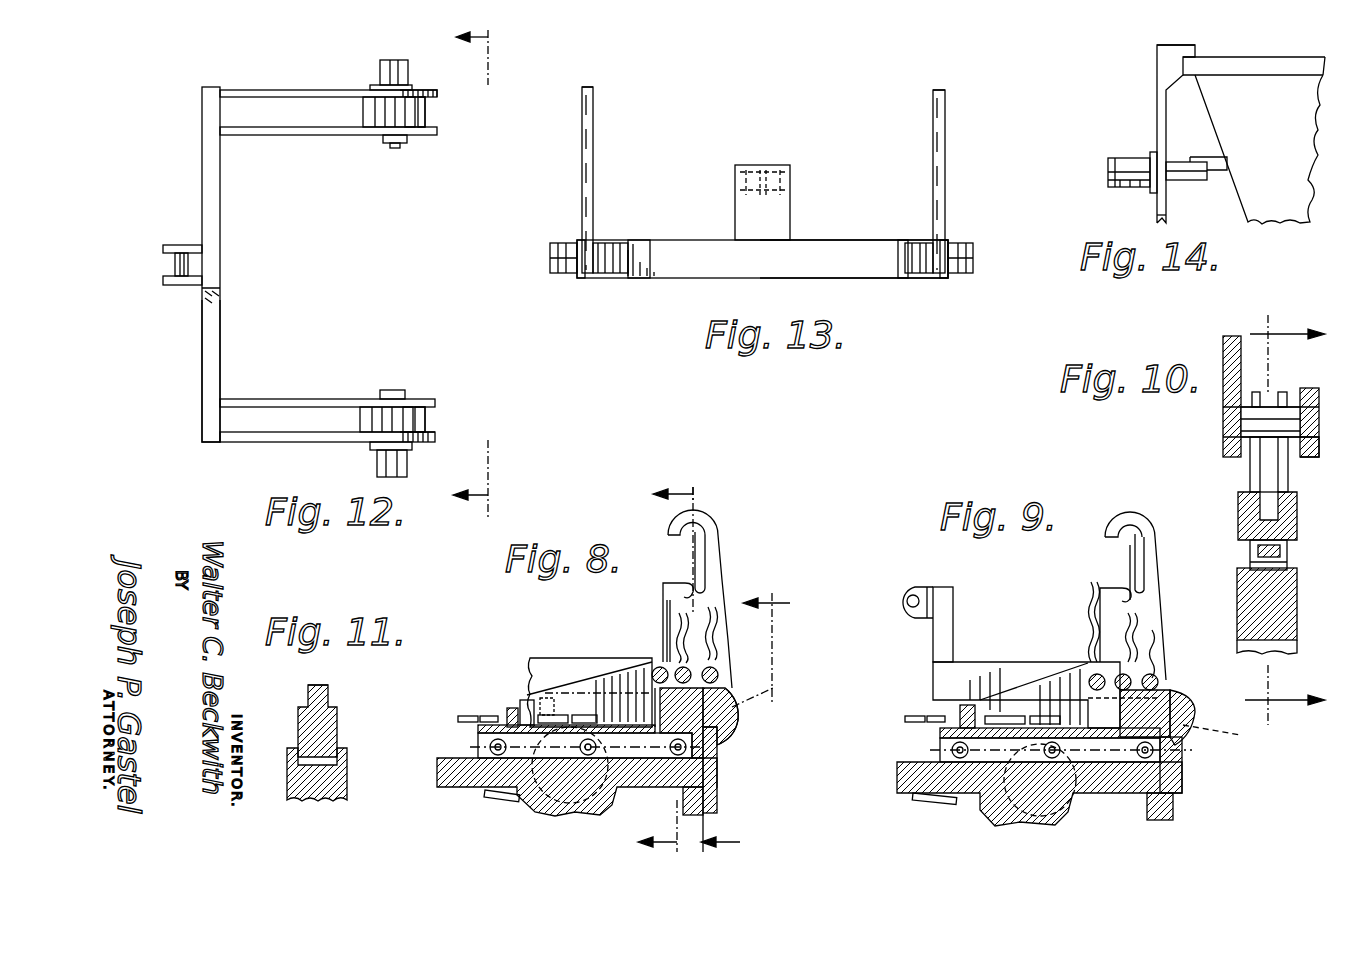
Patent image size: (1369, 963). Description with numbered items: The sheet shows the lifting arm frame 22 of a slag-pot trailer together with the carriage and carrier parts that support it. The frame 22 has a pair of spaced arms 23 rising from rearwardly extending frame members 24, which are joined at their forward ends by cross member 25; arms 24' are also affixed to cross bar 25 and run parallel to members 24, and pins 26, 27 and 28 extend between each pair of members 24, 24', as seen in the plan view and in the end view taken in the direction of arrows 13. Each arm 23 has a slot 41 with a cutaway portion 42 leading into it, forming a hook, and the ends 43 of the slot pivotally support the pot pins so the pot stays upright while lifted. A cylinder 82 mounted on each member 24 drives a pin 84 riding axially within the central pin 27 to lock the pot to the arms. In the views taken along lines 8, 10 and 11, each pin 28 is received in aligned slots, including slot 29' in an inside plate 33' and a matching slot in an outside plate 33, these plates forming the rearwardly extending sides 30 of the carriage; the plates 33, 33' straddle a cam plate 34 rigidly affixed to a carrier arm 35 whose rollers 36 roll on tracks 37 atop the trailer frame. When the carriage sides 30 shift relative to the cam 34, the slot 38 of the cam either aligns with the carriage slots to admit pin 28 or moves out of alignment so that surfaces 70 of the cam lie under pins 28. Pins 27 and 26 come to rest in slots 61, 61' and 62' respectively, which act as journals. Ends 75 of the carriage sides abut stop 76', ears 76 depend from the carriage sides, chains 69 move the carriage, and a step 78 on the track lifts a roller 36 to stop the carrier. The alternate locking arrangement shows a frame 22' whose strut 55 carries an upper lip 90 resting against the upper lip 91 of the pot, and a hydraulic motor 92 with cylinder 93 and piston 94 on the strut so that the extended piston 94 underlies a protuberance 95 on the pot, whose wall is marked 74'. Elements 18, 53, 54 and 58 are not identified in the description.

In FIG. 10, the section line 8— 8 is at (1285, 519).
In FIG. 8, the section line 10— 10 is at (668, 663).
In FIG. 8, the section line 11— 11 is at (755, 716).
In FIG. 12, the view arrows 13— 13 is at (494, 273).
In FIG. 8, the base member 18 is at (565, 815).
In FIG. 12, the lifting arm frame 22 is at (236, 264).
In FIG. 13, the lifting arm frame 22 is at (762, 272).
In FIG. 14, the lifting arm frame 22' is at (1151, 134).
In FIG. 12, the arms 23 is at (425, 97).
In FIG. 13, the arms 23 is at (587, 87).
In FIG. 8, the arms 23 is at (718, 522).
In FIG. 9, the arms 23 is at (1150, 490).
In FIG. 12, the frame members 24 is at (328, 264).
In FIG. 13, the frame members 24 is at (778, 279).
In FIG. 10, the frame members 24 is at (1244, 425).
In FIG. 12, the arms 24' is at (328, 267).
In FIG. 13, the arms 24' is at (771, 279).
In FIG. 10, the arms 24' is at (1325, 459).
In FIG. 8, the arms 24' is at (589, 677).
In FIG. 9, the arms 24' is at (1046, 680).
In FIG. 12, the cross member 25 is at (218, 338).
In FIG. 13, the cross member 25 is at (798, 278).
In FIG. 12, the pins 26 is at (363, 110).
In FIG. 8, the pins 26 is at (665, 625).
In FIG. 9, the pins 26 is at (1091, 590).
In FIG. 12, the pins 27 is at (430, 120).
In FIG. 8, the pins 27 is at (679, 633).
In FIG. 9, the pins 27 is at (1125, 636).
In FIG. 12, the pins 28 is at (415, 108).
In FIG. 13, the pins 28 is at (605, 250).
In FIG. 8, the pins 28 is at (720, 672).
In FIG. 9, the pins 28 is at (1160, 690).
In FIG. 8, the slot 29' is at (760, 746).
In FIG. 9, the slot 29' is at (1216, 738).
In FIG. 10, the carriage sides 30 is at (1240, 512).
In FIG. 10, the side plate 33 is at (1206, 394).
In FIG. 10, the side plate 33' is at (1324, 403).
In FIG. 10, the cam plate 34 is at (1250, 472).
In FIG. 8, the cam plate 34 is at (770, 690).
In FIG. 9, the cam plate 34 is at (1185, 745).
In FIG. 8, the carrier arms 35 is at (670, 775).
In FIG. 9, the carrier arms 35 is at (1098, 790).
In FIG. 11, the carrier arms 35 is at (308, 692).
In FIG. 10, the rollers 36 is at (1288, 556).
In FIG. 8, the rollers 36 is at (718, 787).
In FIG. 9, the rollers 36 is at (948, 805).
In FIG. 11, the rollers 36 is at (337, 724).
In FIG. 10, the tracks 37 is at (1297, 596).
In FIG. 8, the tracks 37 is at (478, 747).
In FIG. 9, the tracks 37 is at (940, 750).
In FIG. 8, the slot 38 is at (740, 715).
In FIG. 9, the slot 38 is at (1183, 690).
In FIG. 8, the slot 41 is at (706, 535).
In FIG. 9, the slot 41 is at (1148, 535).
In FIG. 13, the cutaway portion 42 is at (593, 137).
In FIG. 8, the cutaway portion 42 is at (672, 545).
In FIG. 9, the cutaway portion 42 is at (1150, 598).
In FIG. 8, the slot ends 43 is at (668, 583).
In FIG. 9, the slot ends 43 is at (1105, 588).
In FIG. 12, the bolt 53 is at (165, 262).
In FIG. 13, the bolt 53 is at (770, 165).
In FIG. 9, the bolt 53 is at (908, 594).
In FIG. 12, the plate 54 is at (185, 245).
In FIG. 13, the plate 54 is at (740, 184).
In FIG. 9, the plate 54 is at (930, 587).
In FIG. 13, the strut 55 is at (735, 210).
In FIG. 14, the strut 55 is at (1158, 218).
In FIG. 9, the strut 55 is at (953, 612).
In FIG. 8, the lower block 58 is at (705, 812).
In FIG. 9, the lower block 58 is at (1175, 815).
In FIG. 10, the slot 61 is at (1218, 403).
In FIG. 10, the slot 61' is at (1317, 399).
In FIG. 8, the slot 62' is at (658, 658).
In FIG. 9, the slot 62' is at (1104, 646).
In FIG. 8, the chains 69 is at (460, 706).
In FIG. 9, the chains 69 is at (905, 719).
In FIG. 8, the surfaces 70 is at (710, 627).
In FIG. 9, the surfaces 70 is at (1160, 675).
In FIG. 14, the wall 74' is at (1272, 149).
In FIG. 8, the ends 75 is at (530, 700).
In FIG. 8, the ears 76 is at (483, 695).
In FIG. 9, the ears 76 is at (1019, 710).
In FIG. 8, the stop 76' is at (506, 692).
In FIG. 8, the step 78 is at (718, 765).
In FIG. 9, the step 78 is at (1183, 780).
In FIG. 11, the step 78 is at (347, 775).
In FIG. 12, the cylinder 82 is at (402, 48).
In FIG. 13, the cylinder 82 is at (565, 243).
In FIG. 12, the pin 84 is at (395, 148).
In FIG. 14, the upper lip 90 is at (1200, 47).
In FIG. 14, the upper lip 91 is at (1310, 62).
In FIG. 14, the hydraulic motor 92 is at (1148, 190).
In FIG. 14, the cylinder 93 is at (1135, 148).
In FIG. 14, the piston 94 is at (1185, 180).
In FIG. 14, the protuberance 95 is at (1200, 157).